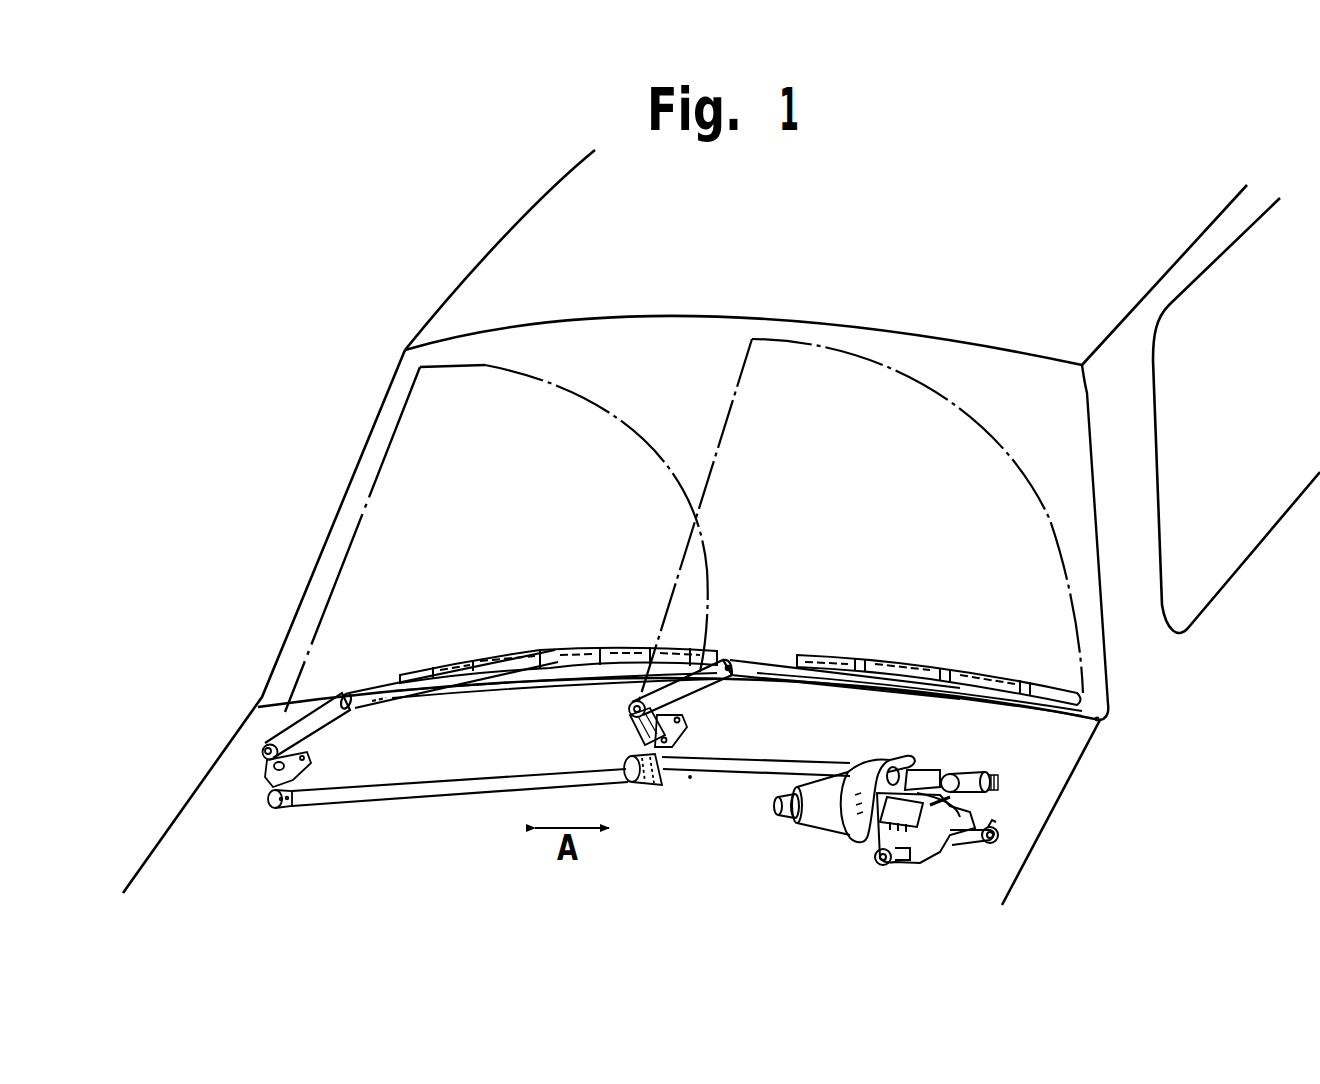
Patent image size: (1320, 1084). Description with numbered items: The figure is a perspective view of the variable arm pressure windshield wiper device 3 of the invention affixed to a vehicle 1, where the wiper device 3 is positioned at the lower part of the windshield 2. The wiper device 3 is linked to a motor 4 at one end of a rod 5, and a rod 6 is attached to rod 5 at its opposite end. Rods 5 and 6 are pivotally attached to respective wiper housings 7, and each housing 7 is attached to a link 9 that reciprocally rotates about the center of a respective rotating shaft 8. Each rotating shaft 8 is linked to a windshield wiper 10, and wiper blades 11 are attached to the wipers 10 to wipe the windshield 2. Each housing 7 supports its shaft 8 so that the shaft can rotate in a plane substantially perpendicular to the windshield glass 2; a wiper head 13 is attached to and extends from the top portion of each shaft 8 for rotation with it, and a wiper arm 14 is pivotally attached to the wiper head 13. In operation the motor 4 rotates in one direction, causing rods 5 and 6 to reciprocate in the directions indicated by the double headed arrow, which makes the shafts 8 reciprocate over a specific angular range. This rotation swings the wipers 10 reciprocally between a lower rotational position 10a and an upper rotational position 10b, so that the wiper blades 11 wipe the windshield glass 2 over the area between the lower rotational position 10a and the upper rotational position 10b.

The vehicle 1 is at (477, 270).
The windshield 2 is at (1021, 355).
The windshield wiper device 3 is at (690, 777).
The motor 4 is at (825, 822).
The rod 5 is at (757, 765).
The rod 6 is at (460, 790).
The wiper housing 7 is at (307, 755).
The rotating shaft 8 is at (267, 768).
The link 9 is at (268, 795).
The windshield wiper 10 is at (487, 647).
The lower rotational position 10a is at (644, 705).
The upper rotational position 10b is at (743, 363).
The wiper blade 11 is at (562, 673).
The wiper head 13 is at (272, 740).
The wiper arm 14 is at (397, 685).